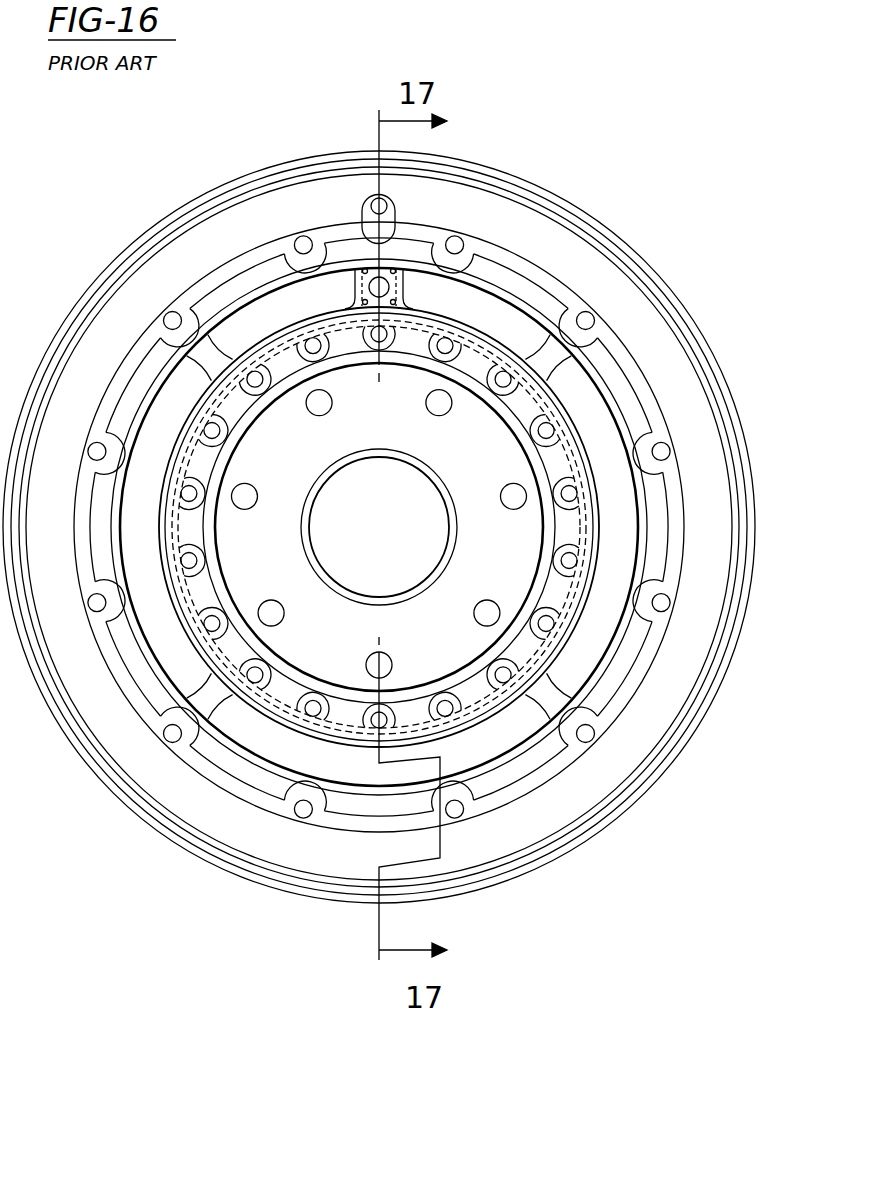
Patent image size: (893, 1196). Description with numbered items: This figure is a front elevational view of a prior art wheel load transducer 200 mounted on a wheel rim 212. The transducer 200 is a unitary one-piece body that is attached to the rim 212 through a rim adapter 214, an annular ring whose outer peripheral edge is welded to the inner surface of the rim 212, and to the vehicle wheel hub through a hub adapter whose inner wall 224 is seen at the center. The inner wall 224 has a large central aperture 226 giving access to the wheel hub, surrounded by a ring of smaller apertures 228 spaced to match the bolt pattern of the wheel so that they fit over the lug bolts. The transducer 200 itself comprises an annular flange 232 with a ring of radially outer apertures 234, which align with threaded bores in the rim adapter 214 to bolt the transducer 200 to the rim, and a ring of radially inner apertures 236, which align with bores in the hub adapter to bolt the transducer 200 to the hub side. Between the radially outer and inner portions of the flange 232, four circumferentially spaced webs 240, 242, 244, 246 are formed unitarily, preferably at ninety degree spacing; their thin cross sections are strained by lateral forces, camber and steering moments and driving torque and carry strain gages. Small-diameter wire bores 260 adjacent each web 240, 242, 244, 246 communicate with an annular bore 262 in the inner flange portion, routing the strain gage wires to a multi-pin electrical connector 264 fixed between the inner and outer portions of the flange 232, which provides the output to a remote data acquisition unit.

The load transducer 200 is at (603, 357).
The wheel rim 212 is at (523, 178).
The rim adapter 214 is at (533, 235).
The inner wall 224 is at (232, 573).
The central aperture 226 is at (320, 513).
The smaller apertures 228 is at (266, 620).
The annular flange 232 is at (652, 392).
The radially outer apertures 234 is at (664, 447).
The radially inner apertures 236 is at (573, 560).
The web 240 is at (543, 340).
The web 242 is at (557, 706).
The web 244 is at (217, 712).
The web 246 is at (218, 362).
The wire bores 260 is at (553, 390).
The annular bore 262 is at (487, 345).
The electrical connector 264 is at (352, 290).